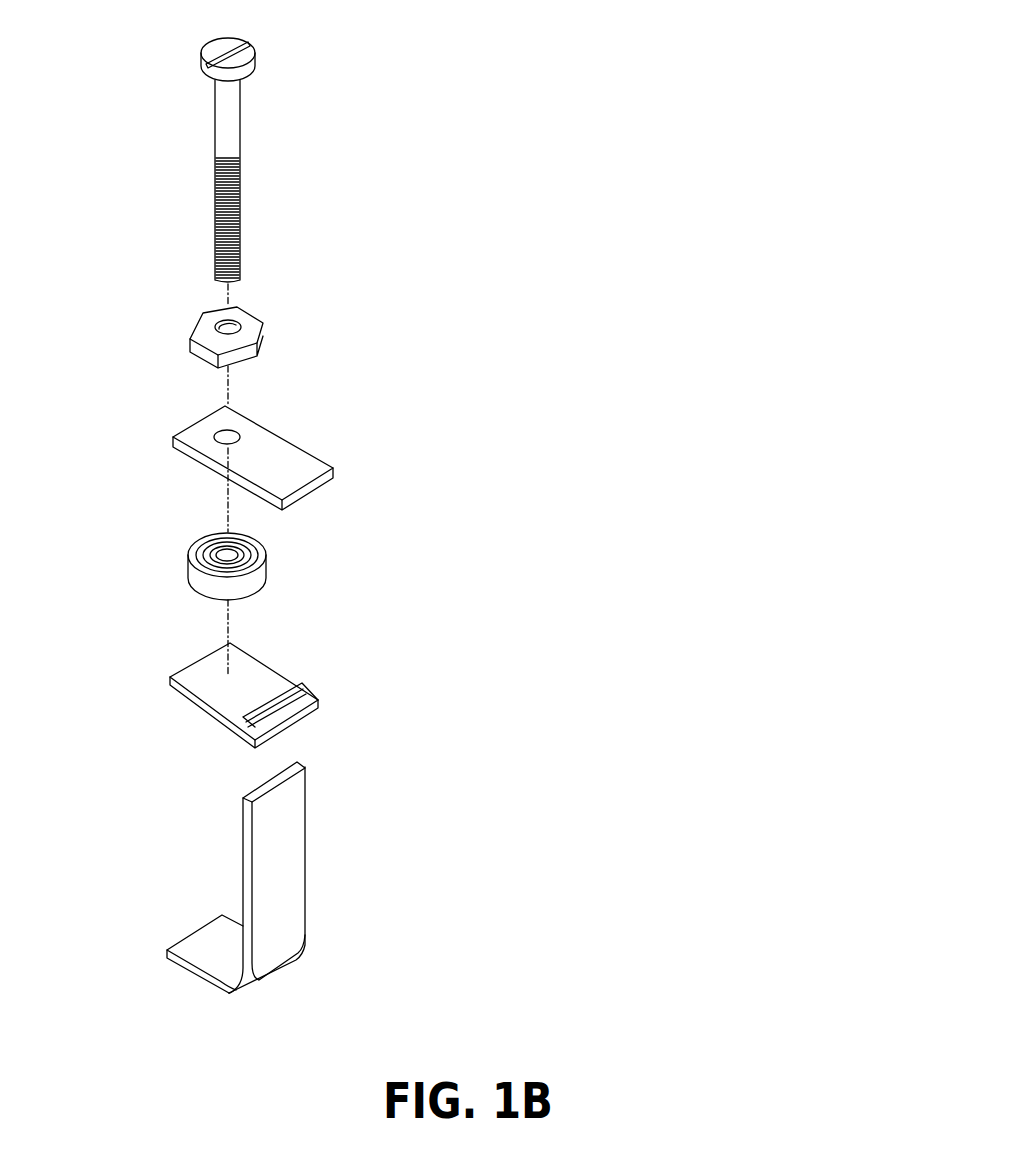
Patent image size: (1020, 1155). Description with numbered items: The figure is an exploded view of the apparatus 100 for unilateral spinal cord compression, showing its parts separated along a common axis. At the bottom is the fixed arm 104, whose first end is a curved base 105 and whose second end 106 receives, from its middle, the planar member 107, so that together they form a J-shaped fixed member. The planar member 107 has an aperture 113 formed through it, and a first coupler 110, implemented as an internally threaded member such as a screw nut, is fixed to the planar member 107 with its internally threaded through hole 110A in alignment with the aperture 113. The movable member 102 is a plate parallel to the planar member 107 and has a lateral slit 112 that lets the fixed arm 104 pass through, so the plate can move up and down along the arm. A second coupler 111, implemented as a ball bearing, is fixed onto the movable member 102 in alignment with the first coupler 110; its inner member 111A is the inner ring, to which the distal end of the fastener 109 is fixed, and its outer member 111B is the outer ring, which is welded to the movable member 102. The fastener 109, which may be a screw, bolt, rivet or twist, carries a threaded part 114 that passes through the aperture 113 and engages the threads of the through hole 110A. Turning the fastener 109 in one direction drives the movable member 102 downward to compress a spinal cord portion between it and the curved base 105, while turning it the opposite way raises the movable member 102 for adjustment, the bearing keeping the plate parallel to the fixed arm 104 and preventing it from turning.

The apparatus 100 is at (461, 522).
The movable member 102 is at (319, 668).
The fixed arm 104 is at (266, 871).
The curved base 105 is at (190, 960).
The second end 106 is at (300, 763).
The planar member 107 is at (340, 431).
The fastener 109 is at (312, 147).
The first coupler 110 is at (255, 297).
The internally threaded through hole 110A is at (226, 327).
The second coupler 111 is at (239, 518).
The inner member 111A is at (216, 548).
The outer member 111B is at (200, 578).
The lateral slit 112 is at (303, 687).
The aperture 113 is at (230, 436).
The threaded part 114 is at (240, 220).